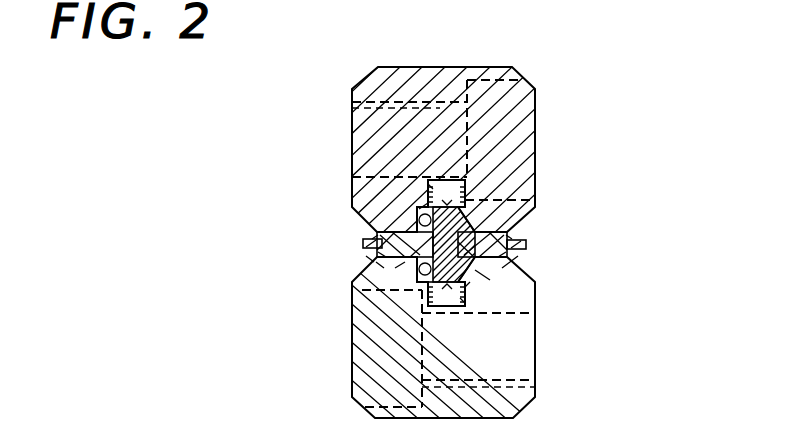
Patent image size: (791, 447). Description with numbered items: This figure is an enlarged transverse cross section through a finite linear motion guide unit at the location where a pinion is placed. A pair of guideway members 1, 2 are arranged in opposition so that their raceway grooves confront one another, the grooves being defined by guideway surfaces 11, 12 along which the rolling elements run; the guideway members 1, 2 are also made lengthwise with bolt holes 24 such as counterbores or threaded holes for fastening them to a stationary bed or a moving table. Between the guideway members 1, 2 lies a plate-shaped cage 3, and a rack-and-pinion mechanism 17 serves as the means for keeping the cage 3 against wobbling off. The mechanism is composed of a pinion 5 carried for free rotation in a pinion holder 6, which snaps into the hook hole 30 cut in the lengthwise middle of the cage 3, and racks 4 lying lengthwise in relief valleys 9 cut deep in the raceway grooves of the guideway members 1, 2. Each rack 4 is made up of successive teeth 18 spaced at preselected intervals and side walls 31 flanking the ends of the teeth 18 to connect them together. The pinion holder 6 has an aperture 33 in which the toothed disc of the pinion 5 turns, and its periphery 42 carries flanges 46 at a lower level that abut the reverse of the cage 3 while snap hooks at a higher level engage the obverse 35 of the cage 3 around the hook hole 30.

The guideway member 1 is at (427, 87).
The guideway member 2 is at (470, 398).
The cage 3 is at (372, 242).
The rack 4 is at (431, 183).
The pinion 5 is at (480, 278).
The pinion holder 6 is at (381, 236).
The relief valley 9 is at (445, 180).
The guideway surface 11 is at (352, 311).
The guideway surface 12 is at (421, 214).
The rack-and-pinion mechanism 17 is at (352, 335).
The teeth 18 is at (429, 203).
The bolt hole 24 is at (437, 109).
The hook hole 30 is at (376, 262).
The side wall 31 is at (428, 191).
The aperture 33 is at (395, 268).
The obverse 35 is at (370, 262).
The periphery 42 is at (378, 255).
The flange 46 is at (361, 240).